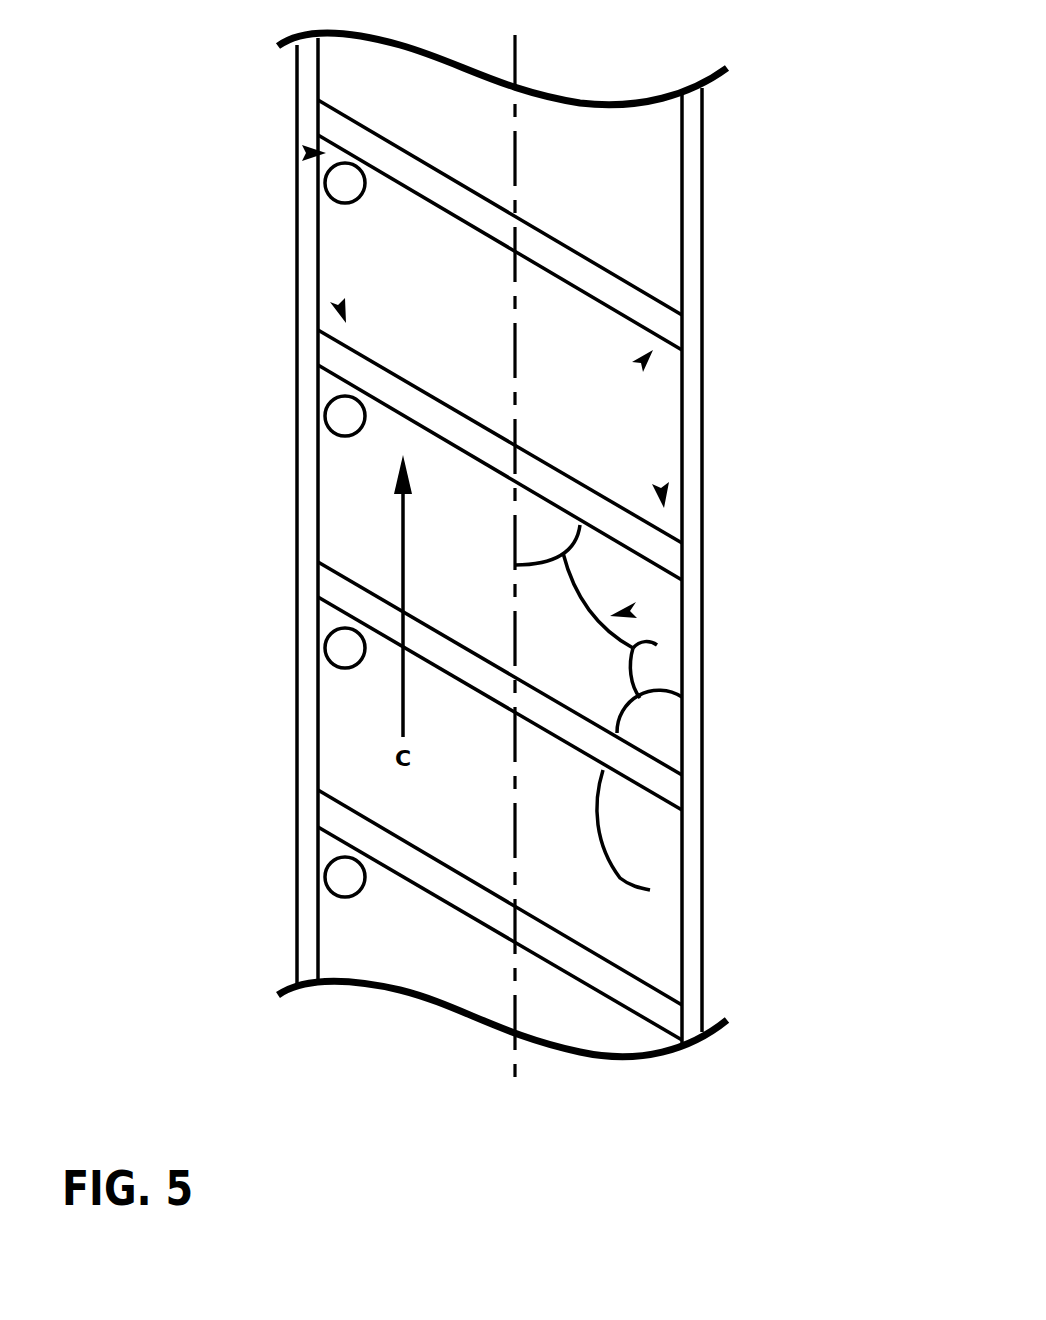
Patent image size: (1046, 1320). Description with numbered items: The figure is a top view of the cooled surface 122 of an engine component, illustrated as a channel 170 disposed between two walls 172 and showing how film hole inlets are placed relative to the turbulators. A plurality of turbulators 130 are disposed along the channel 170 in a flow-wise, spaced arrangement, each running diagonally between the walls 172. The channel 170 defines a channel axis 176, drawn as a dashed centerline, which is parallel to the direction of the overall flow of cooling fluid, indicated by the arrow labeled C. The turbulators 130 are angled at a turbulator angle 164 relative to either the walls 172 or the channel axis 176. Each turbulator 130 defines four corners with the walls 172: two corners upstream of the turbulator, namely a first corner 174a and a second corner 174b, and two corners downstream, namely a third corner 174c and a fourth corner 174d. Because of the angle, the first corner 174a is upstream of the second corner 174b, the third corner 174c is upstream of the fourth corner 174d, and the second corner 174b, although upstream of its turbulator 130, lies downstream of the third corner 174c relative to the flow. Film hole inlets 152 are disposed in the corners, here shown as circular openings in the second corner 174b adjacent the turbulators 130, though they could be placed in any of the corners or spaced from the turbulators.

The cooled surface 122 is at (632, 178).
The turbulator 130 is at (607, 268).
The film hole inlet 152 is at (340, 202).
The turbulator angle 164 is at (657, 645).
The channel 170 is at (630, 611).
The wall 172 is at (298, 478).
The first corner 174a is at (641, 363).
The second corner 174b is at (306, 153).
The third corner 174c is at (661, 488).
The fourth corner 174d is at (338, 304).
The channel axis 176 is at (517, 45).